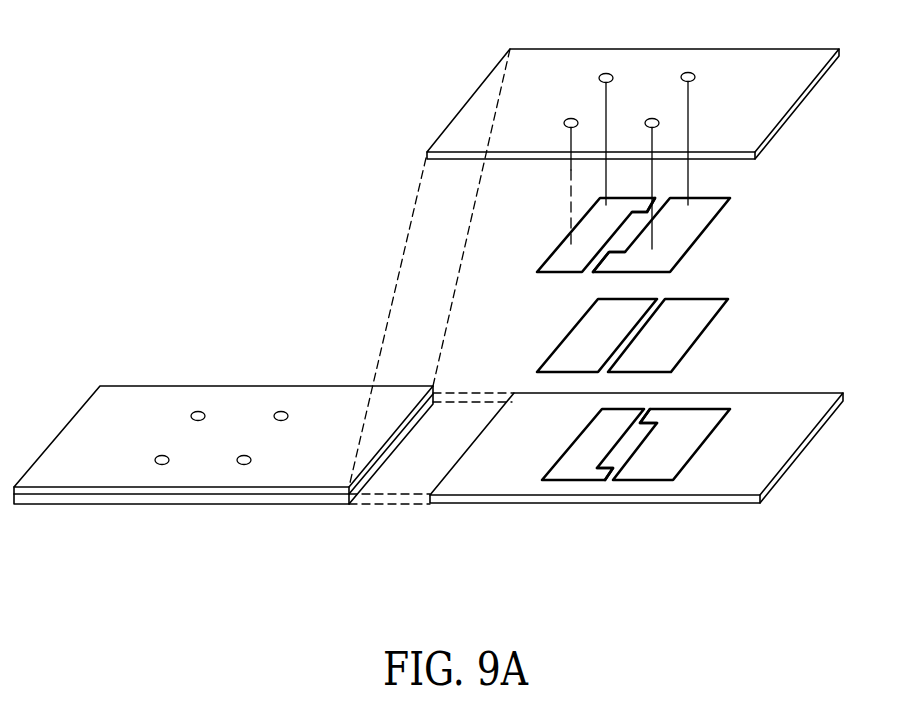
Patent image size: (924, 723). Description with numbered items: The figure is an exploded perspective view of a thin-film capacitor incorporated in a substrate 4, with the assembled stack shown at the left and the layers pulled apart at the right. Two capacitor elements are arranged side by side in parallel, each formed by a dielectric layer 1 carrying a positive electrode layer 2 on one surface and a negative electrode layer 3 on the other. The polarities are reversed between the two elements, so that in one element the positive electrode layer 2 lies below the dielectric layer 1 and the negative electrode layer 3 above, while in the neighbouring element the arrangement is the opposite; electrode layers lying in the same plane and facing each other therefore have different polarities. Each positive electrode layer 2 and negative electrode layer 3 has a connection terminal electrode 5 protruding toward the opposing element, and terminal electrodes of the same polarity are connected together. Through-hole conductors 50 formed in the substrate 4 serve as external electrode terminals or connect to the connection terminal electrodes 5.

The dielectric layer 1 is at (570, 338).
The positive electrode layer 2 is at (678, 248).
The negative electrode layer 3 is at (560, 250).
The substrate 4 is at (773, 103).
The connection terminal electrode 5 is at (645, 200).
The through-hole conductor 50 is at (690, 72).